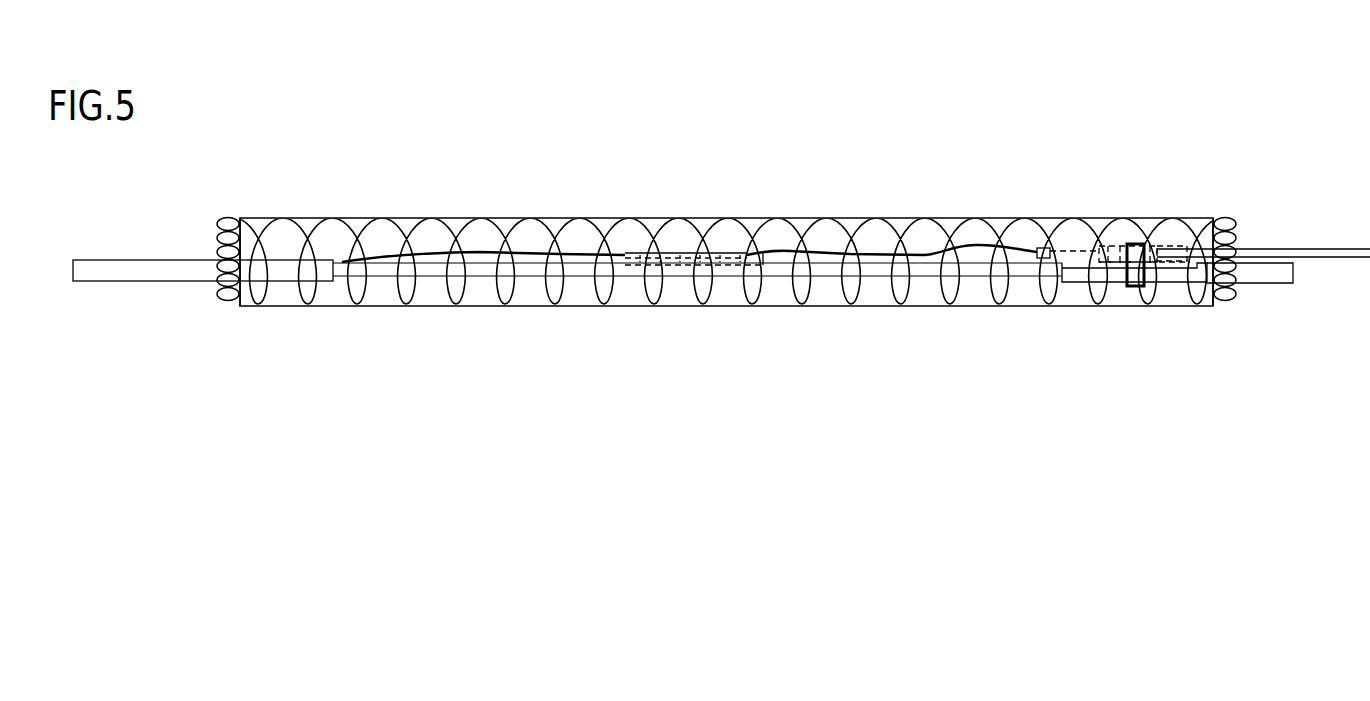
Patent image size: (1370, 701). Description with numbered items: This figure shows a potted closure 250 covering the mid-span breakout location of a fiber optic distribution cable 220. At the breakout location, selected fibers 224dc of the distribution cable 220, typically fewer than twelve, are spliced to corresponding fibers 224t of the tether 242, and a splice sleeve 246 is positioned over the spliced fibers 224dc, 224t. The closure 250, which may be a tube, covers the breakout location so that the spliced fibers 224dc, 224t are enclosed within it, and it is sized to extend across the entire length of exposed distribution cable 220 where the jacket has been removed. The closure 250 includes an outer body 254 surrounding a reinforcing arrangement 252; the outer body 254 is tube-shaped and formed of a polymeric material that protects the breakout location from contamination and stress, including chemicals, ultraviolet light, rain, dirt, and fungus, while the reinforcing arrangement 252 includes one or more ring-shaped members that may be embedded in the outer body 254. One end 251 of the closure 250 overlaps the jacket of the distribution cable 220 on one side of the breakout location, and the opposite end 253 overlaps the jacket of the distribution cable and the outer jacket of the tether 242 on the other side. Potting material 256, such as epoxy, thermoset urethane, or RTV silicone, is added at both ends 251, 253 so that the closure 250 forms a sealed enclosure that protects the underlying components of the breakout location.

The distribution cable 220 is at (162, 271).
The fibers of the distribution cable 224dc is at (477, 252).
The fibers of the tether 224t is at (933, 250).
The tether 242 is at (1303, 255).
The splice sleeve 246 is at (612, 263).
The closure 250 is at (1055, 219).
The end of the closure 251 is at (245, 217).
The reinforcing arrangement 252 is at (370, 285).
The opposite end of the closure 253 is at (1213, 220).
The outer body 254 is at (690, 218).
The potting material 256 is at (218, 282).